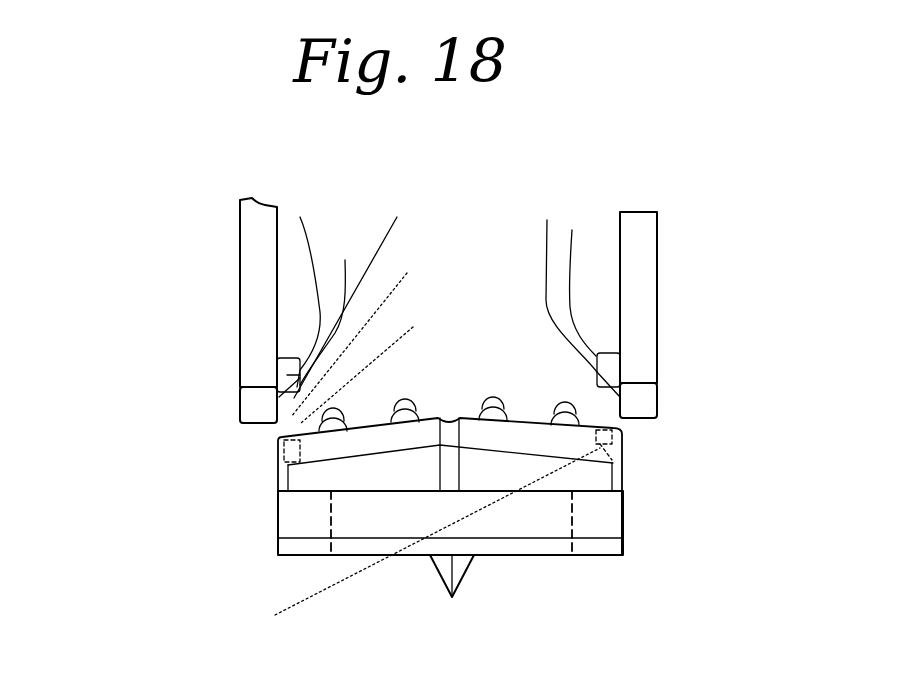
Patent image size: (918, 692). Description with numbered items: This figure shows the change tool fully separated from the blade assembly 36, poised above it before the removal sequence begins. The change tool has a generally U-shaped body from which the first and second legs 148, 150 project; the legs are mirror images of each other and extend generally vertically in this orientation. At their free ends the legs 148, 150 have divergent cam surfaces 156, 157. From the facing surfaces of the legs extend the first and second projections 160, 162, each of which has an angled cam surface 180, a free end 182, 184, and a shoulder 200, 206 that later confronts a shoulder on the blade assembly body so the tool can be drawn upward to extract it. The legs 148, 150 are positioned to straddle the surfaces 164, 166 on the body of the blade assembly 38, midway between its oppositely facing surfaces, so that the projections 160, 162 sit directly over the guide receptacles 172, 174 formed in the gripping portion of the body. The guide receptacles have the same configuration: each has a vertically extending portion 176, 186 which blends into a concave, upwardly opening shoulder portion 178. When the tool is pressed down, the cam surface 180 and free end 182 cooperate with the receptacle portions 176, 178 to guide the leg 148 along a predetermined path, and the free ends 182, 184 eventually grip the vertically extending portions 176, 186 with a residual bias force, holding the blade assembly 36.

The first leg 148 is at (240, 255).
The second leg 150 is at (657, 253).
The cam surface 156 is at (262, 424).
The cam surface 157 is at (640, 420).
The first projection 160 is at (345, 260).
The second projection 162 is at (547, 220).
The surface 164 is at (627, 515).
The surface 166 is at (277, 525).
The guide receptacle 172 is at (407, 273).
The guide receptacle 174 is at (612, 440).
The vertically extending portion 176 is at (413, 327).
The shoulder portion 178 is at (283, 462).
The angled cam surface 180 is at (397, 217).
The free end 182 is at (300, 217).
The free end 184 is at (572, 230).
The vertically extending portion 186 is at (275, 615).
The upwardly facing shoulder 200 is at (290, 358).
The shoulder 206 is at (608, 353).
The blade assembly 36 is at (595, 510).
The blade assembly 38 is at (438, 577).